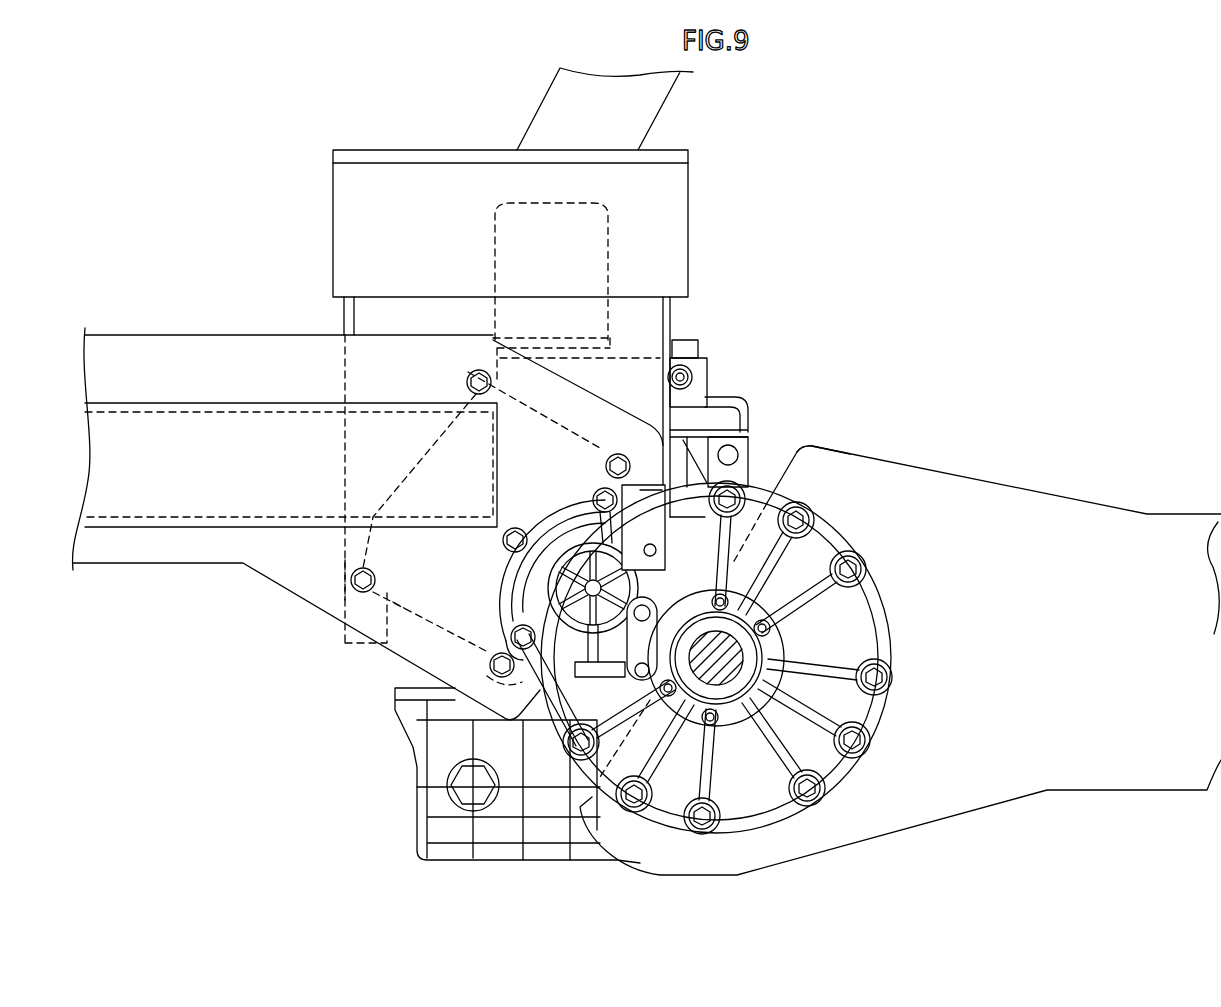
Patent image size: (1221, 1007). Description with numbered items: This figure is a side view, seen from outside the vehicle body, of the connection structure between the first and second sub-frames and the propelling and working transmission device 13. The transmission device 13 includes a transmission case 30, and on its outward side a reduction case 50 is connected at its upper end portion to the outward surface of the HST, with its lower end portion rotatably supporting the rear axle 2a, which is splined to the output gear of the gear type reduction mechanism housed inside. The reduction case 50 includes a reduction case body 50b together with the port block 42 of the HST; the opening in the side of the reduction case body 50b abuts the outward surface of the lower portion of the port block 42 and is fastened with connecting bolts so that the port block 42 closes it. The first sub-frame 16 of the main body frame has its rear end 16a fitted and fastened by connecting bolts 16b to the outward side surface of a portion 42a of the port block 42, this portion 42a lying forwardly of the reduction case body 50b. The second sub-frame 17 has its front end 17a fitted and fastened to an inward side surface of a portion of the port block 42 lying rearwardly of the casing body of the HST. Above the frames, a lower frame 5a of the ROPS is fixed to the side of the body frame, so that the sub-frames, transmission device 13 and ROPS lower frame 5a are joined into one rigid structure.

The lower frame 5a is at (647, 117).
The first sub-frame 16 is at (185, 350).
The rear end of first sub-frame 16a is at (577, 408).
The connecting bolts 16b is at (470, 373).
The port block 42 is at (383, 643).
The portion of port block 42a is at (400, 542).
The transmission case 30 is at (404, 755).
The propelling and working transmission device 13 is at (754, 376).
The second sub-frame 17 is at (998, 496).
The front end of second sub-frame 17a is at (808, 467).
The reduction case 50 is at (781, 657).
The reduction case body 50b is at (890, 658).
The rear axle 2a is at (722, 723).